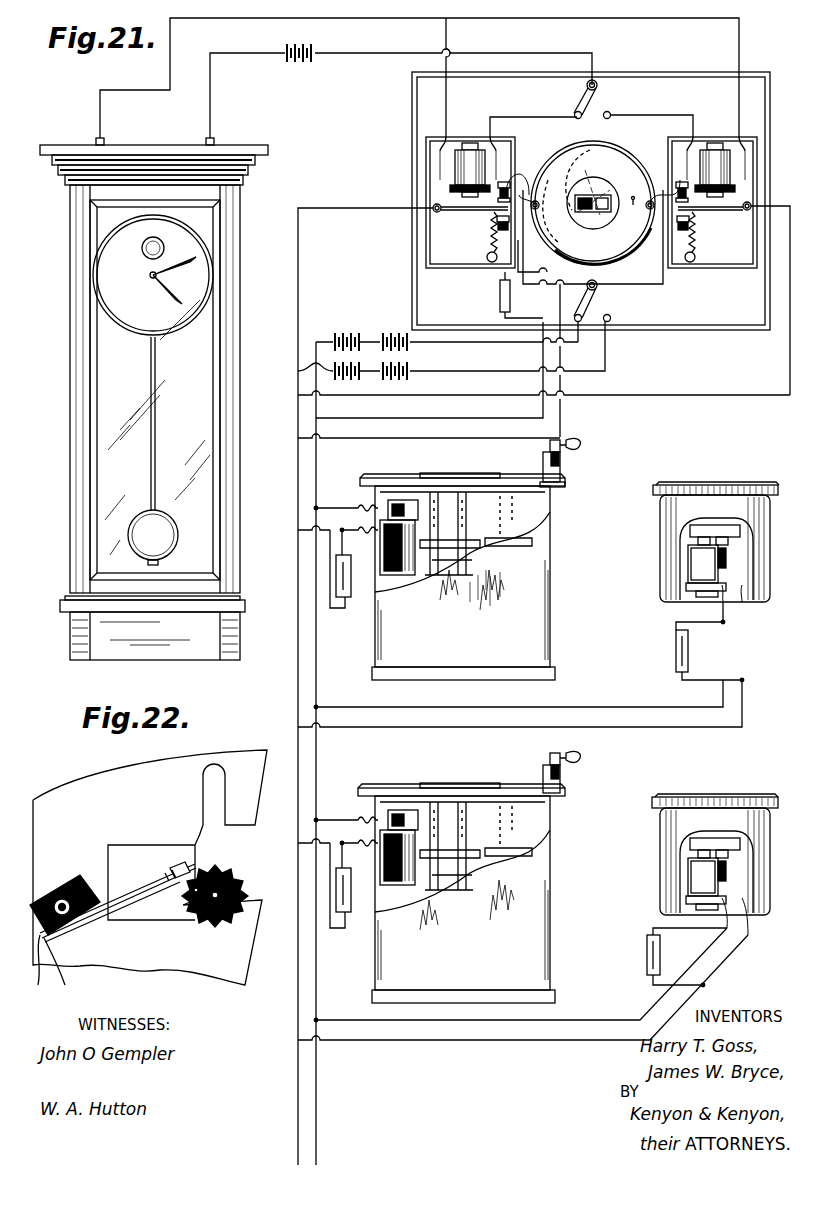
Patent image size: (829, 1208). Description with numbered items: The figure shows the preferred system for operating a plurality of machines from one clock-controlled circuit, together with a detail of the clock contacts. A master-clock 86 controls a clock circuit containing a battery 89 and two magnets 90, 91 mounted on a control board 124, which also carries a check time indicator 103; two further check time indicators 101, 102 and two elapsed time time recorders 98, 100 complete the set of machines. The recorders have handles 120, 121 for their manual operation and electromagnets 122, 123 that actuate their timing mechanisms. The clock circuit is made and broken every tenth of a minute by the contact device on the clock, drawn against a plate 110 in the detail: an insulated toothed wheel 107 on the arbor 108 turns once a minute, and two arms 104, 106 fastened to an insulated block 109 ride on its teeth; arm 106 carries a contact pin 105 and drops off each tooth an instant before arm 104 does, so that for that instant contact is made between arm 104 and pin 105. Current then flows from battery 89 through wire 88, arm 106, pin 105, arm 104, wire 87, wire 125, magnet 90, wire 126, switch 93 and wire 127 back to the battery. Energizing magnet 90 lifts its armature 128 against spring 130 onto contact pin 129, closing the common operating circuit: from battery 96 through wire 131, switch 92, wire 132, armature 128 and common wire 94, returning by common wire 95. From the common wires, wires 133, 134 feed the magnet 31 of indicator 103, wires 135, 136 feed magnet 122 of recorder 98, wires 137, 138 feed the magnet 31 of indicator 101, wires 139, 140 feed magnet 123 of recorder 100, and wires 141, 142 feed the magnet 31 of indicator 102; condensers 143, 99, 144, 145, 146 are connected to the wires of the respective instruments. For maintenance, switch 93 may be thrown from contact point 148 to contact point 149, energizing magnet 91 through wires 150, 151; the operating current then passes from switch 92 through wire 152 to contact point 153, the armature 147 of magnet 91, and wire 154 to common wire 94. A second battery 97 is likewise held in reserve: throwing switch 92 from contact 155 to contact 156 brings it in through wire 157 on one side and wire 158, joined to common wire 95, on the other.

In FIG. 21, the magnet 31 is at (596, 180).
In FIG. 21, the master-clock 86 is at (154, 399).
In FIG. 21, the wire 87 is at (244, 18).
In FIG. 22, the wire 87 is at (40, 969).
In FIG. 21, the wire 88 is at (244, 53).
In FIG. 22, the wire 88 is at (67, 970).
In FIG. 21, the battery 89 is at (309, 61).
In FIG. 21, the magnet 90 is at (455, 170).
In FIG. 21, the magnet 91 is at (722, 172).
In FIG. 21, the switch 92 is at (598, 290).
In FIG. 21, the switch 93 is at (600, 99).
In FIG. 21, the common wire 94 is at (296, 348).
In FIG. 21, the common wire 95 is at (320, 470).
In FIG. 21, the battery 96 is at (429, 329).
In FIG. 21, the second battery 97 is at (470, 360).
In FIG. 21, the elapsed time time recorder 98 is at (462, 576).
In FIG. 21, the condenser 99 is at (338, 571).
In FIG. 21, the elapsed time time recorder 100 is at (461, 893).
In FIG. 21, the check time indicator 101 is at (716, 542).
In FIG. 21, the check time indicator 102 is at (715, 864).
In FIG. 21, the check time indicator 103 is at (593, 203).
In FIG. 22, the arm 104 is at (128, 892).
In FIG. 22, the contact pin 105 is at (178, 866).
In FIG. 22, the arm 106 is at (162, 895).
In FIG. 22, the insulated toothed wheel 107 is at (236, 884).
In FIG. 22, the arbor 108 is at (201, 918).
In FIG. 22, the insulated block 109 is at (75, 918).
In FIG. 22, the plate 110 is at (66, 792).
In FIG. 21, the handle 120 is at (574, 444).
In FIG. 21, the handle 121 is at (578, 758).
In FIG. 21, the electromagnet 122 is at (399, 537).
In FIG. 21, the electromagnet 123 is at (396, 890).
In FIG. 21, the control board 124 is at (757, 122).
In FIG. 21, the wire 125 is at (448, 96).
In FIG. 21, the wire 126 is at (520, 112).
In FIG. 21, the wire 127 is at (526, 50).
In FIG. 21, the armature 128 is at (470, 220).
In FIG. 21, the contact pin 129 is at (505, 170).
In FIG. 21, the spring 130 is at (490, 250).
In FIG. 21, the wire 131 is at (472, 345).
In FIG. 21, the wire 132 is at (516, 252).
In FIG. 21, the wire 133 is at (469, 436).
In FIG. 21, the wire 134 is at (455, 420).
In FIG. 21, the wire 135 is at (296, 534).
In FIG. 21, the wire 136 is at (336, 502).
In FIG. 21, the wire 137 is at (470, 730).
In FIG. 21, the wire 138 is at (536, 708).
In FIG. 21, the wire 139 is at (297, 823).
In FIG. 21, the wire 140 is at (345, 818).
In FIG. 21, the wire 141 is at (524, 1046).
In FIG. 21, the wire 142 is at (575, 1022).
In FIG. 21, the condenser 143 is at (499, 300).
In FIG. 21, the condenser 144 is at (676, 648).
In FIG. 21, the condenser 145 is at (358, 928).
In FIG. 21, the condenser 146 is at (668, 957).
In FIG. 21, the circuit controller 147 is at (717, 212).
In FIG. 21, the contact point 148 is at (578, 118).
In FIG. 21, the contact point 149 is at (609, 118).
In FIG. 21, the wire 150 is at (668, 114).
In FIG. 21, the wire 151 is at (644, 18).
In FIG. 21, the wire 152 is at (660, 276).
In FIG. 21, the contact point 153 is at (662, 171).
In FIG. 21, the wire 154 is at (786, 360).
In FIG. 21, the contact 155 is at (584, 342).
In FIG. 21, the contact 156 is at (612, 317).
In FIG. 21, the wire 157 is at (600, 392).
In FIG. 21, the wire 158 is at (298, 371).